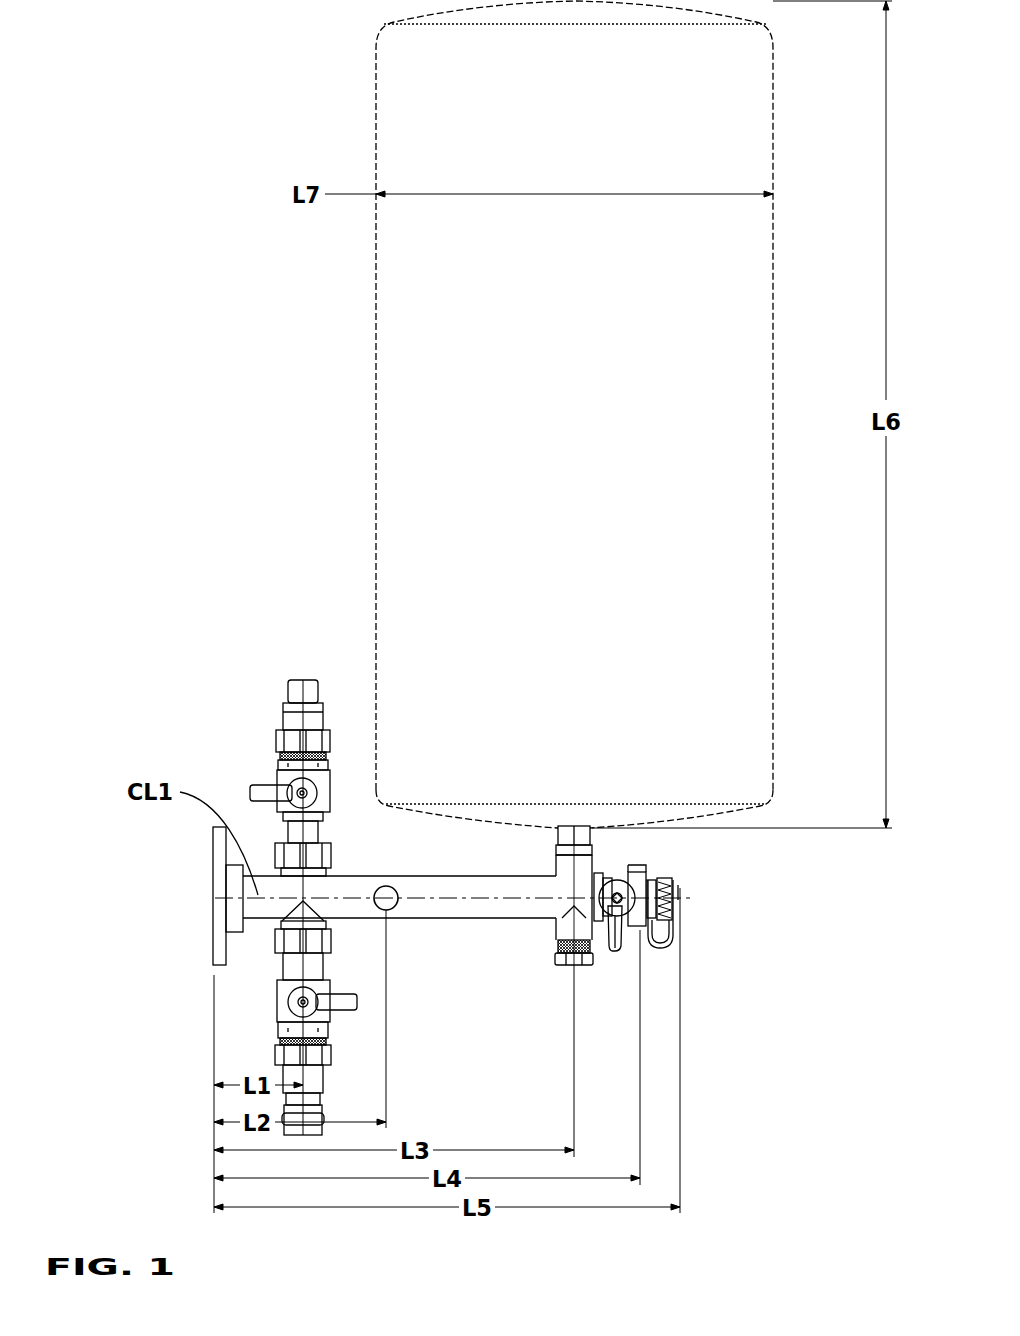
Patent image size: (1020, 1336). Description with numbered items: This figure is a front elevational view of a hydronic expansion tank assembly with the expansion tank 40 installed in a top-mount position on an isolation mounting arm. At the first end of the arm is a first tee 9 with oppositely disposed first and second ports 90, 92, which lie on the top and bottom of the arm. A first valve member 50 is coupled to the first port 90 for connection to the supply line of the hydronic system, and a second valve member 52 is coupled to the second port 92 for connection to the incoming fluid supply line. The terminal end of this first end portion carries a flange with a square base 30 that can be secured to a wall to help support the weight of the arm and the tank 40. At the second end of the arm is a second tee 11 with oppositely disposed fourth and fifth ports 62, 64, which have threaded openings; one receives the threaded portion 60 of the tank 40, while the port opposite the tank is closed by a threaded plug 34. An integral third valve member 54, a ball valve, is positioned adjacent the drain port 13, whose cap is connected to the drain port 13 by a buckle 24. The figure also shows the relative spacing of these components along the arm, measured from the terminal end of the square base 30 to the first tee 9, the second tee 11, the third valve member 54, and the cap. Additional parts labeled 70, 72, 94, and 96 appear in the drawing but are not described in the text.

The first tee 9 is at (300, 903).
The second tee 11 is at (558, 900).
The drain port 13 is at (645, 865).
The buckle 24 is at (660, 945).
The square base 30 is at (218, 950).
The threaded plug 34 is at (587, 957).
The expansion tank 40 is at (437, 381).
The first valve member 50 is at (290, 793).
The second valve member 52 is at (287, 1005).
The third valve member 54 is at (620, 950).
The threaded portion 60 is at (590, 843).
The fourth port 62 is at (590, 855).
The fifth port 64 is at (555, 945).
The end cap 70 is at (282, 740).
The lower nut 72 is at (282, 1050).
The first port 90 is at (330, 855).
The second port 92 is at (330, 938).
The upper pipe segment 94 is at (290, 826).
The lower pipe segment 96 is at (293, 970).